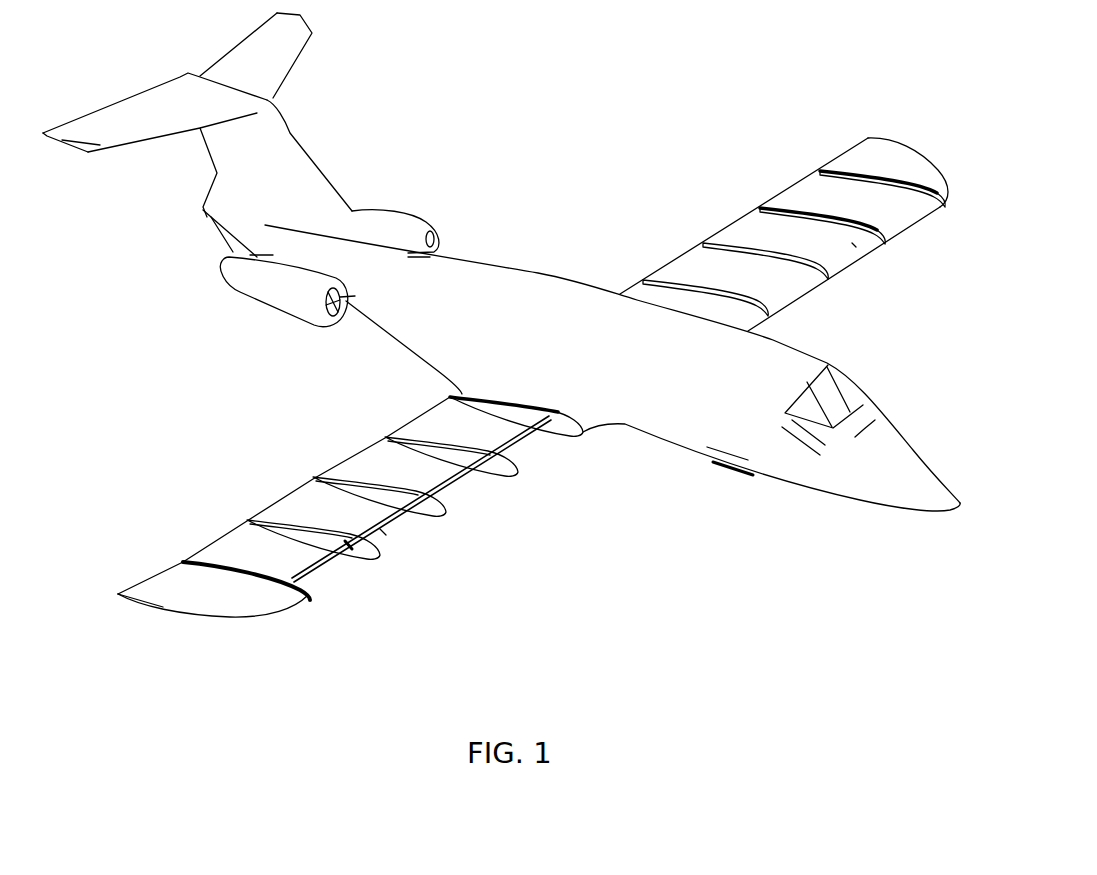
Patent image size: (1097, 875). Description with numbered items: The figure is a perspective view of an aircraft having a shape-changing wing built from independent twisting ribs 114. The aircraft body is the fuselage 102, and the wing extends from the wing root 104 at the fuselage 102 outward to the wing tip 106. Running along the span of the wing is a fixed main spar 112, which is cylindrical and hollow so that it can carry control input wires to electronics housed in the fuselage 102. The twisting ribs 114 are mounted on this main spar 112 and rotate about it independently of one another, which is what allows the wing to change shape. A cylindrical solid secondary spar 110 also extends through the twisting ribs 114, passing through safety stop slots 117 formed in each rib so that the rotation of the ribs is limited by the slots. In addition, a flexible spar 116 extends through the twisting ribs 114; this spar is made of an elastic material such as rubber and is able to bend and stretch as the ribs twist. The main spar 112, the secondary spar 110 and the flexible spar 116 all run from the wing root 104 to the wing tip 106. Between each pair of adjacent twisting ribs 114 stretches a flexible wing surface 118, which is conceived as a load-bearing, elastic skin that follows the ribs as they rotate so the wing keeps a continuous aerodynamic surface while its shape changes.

The fuselage 102 is at (658, 418).
The wing root 104 is at (525, 393).
The wing tip 106 is at (908, 162).
The secondary spar 110 is at (467, 493).
The main spar 112 is at (383, 532).
The twisting ribs 114 is at (850, 167).
The flexible spar 116 is at (292, 500).
The safety stop slots 117 is at (350, 545).
The flexible wing surface 118 is at (852, 243).